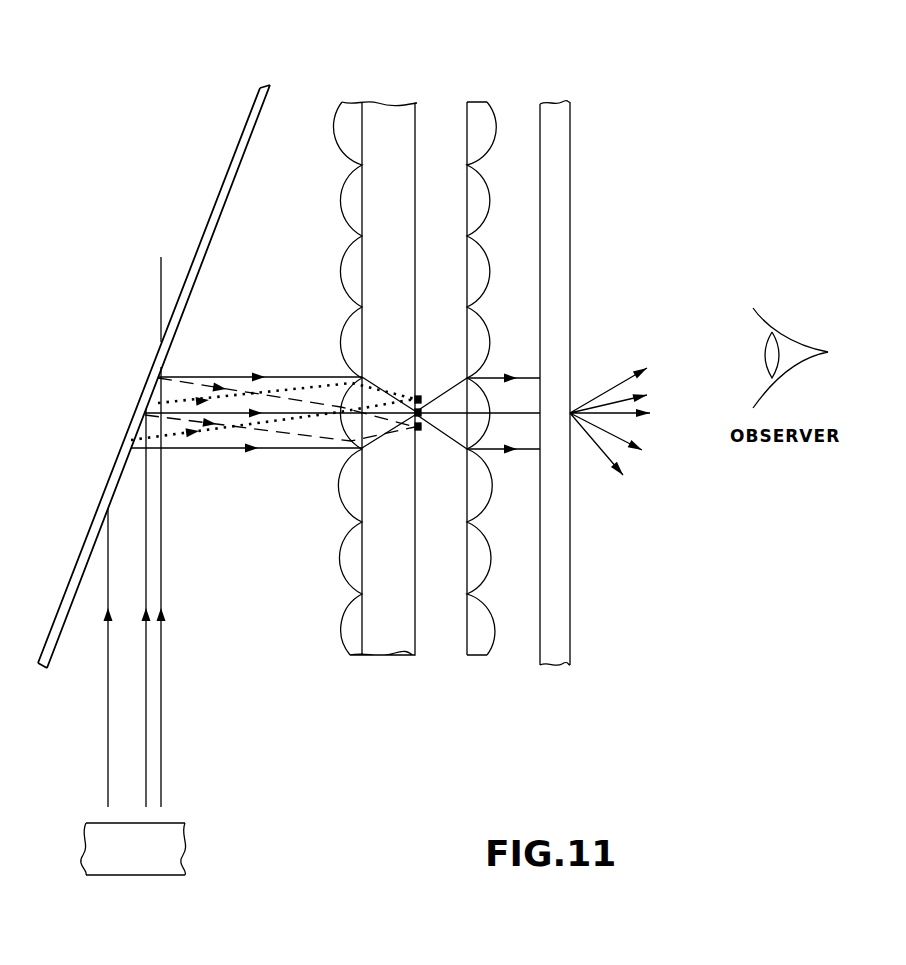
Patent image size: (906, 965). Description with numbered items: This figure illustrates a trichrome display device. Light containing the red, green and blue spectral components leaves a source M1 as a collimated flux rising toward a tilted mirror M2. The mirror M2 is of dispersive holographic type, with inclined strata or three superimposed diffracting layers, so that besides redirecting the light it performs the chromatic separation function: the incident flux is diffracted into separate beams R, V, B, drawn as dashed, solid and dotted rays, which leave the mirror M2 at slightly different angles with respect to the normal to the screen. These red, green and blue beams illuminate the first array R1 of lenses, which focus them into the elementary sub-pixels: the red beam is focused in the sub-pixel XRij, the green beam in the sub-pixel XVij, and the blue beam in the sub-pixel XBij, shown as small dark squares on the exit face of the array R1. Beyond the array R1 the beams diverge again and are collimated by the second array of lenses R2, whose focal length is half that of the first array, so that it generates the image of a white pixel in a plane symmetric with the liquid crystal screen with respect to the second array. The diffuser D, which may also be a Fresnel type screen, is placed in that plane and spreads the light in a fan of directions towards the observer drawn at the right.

The light source / first mirror M1 is at (165, 856).
The mirror M2 is at (223, 200).
The red light ray (dashed) R is at (218, 385).
The green light ray (solid) V is at (283, 375).
The blue light ray (dotted) B is at (213, 437).
The array of lenses R1 is at (357, 108).
The second array of lenses R2 is at (482, 113).
The diffuser D is at (560, 118).
The elementary sub-pixel XBij is at (421, 393).
The green focal point XVij is at (425, 413).
The elementary sub-pixel XRij is at (424, 433).